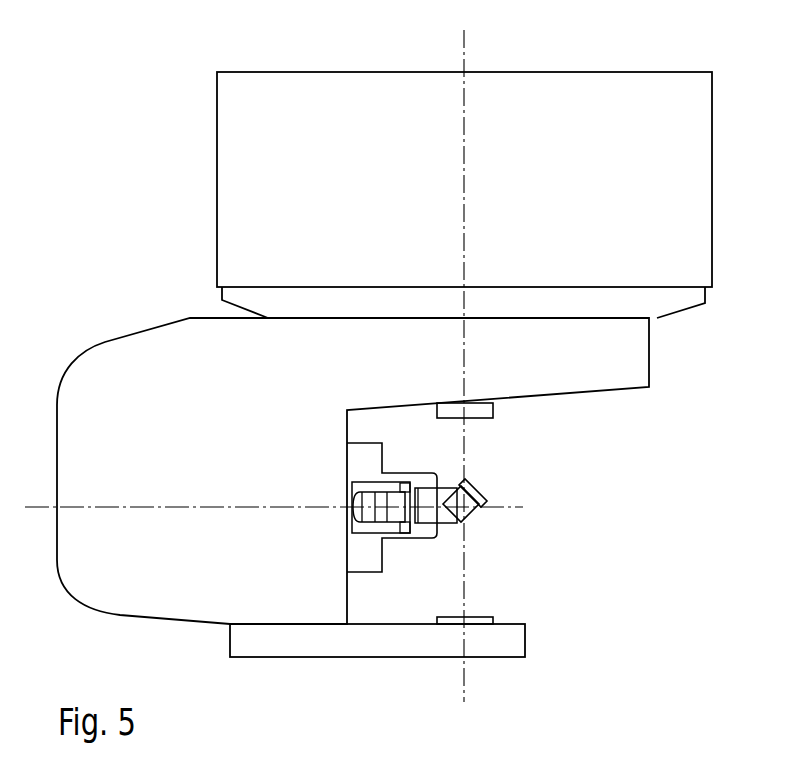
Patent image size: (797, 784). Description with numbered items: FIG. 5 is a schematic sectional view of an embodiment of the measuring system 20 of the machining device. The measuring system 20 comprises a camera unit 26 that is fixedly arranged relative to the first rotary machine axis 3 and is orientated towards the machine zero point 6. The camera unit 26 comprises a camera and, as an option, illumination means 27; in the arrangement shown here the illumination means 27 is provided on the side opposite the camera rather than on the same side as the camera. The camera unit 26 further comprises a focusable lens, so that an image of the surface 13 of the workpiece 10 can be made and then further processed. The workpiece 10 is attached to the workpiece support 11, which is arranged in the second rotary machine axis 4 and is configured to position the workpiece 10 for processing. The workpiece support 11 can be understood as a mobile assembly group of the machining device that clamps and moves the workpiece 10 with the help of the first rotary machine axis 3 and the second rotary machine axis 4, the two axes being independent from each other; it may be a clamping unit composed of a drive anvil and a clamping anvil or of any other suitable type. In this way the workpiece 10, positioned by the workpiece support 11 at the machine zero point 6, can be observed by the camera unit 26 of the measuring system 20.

The first rotary machine axis 3 is at (468, 235).
The measuring system 20 is at (437, 447).
The second rotary machine axis 4 is at (293, 508).
The camera unit 26 is at (493, 410).
The illumination means 27 is at (493, 620).
The workpiece support 11 is at (442, 527).
The workpiece 10 is at (462, 521).
The machine zero point 6 is at (470, 513).
The surface 13 is at (486, 497).